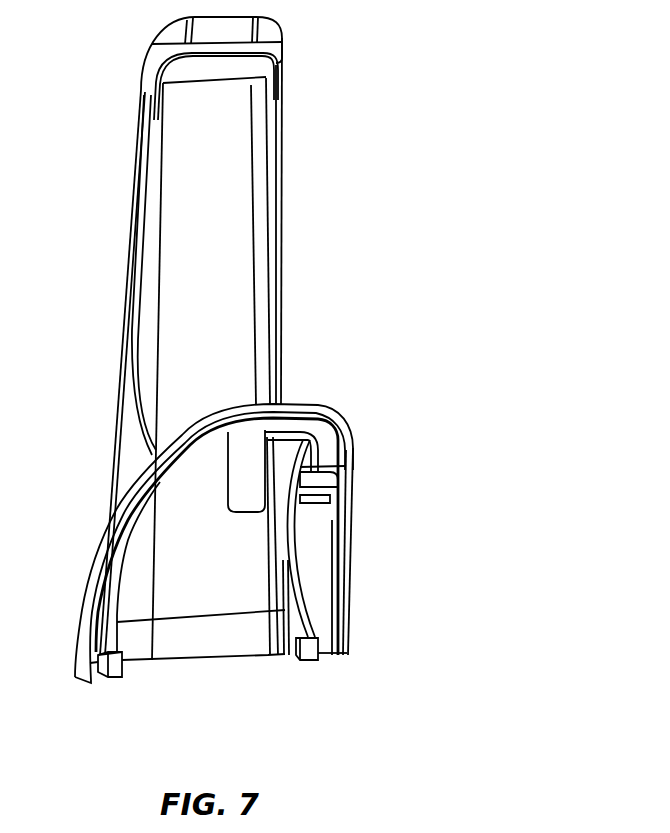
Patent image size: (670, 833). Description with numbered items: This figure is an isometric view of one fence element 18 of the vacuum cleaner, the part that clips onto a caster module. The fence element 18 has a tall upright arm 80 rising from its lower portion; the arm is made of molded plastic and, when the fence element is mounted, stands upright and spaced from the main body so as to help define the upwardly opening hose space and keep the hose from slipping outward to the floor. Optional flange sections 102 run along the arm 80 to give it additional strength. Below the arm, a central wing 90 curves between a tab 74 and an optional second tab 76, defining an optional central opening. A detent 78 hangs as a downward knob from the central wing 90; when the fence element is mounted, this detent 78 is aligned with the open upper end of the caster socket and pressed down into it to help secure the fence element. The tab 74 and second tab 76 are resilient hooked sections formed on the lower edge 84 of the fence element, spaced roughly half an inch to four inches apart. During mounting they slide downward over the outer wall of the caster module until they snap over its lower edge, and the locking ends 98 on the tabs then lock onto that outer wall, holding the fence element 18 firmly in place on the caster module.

The fence element 18 is at (287, 163).
The arm 80 is at (233, 275).
The flange sections 102 is at (130, 443).
The central wing 90 is at (300, 413).
The detent 78 is at (247, 468).
The lower edge 84 is at (202, 660).
The tab 74 is at (110, 680).
The second tab 76 is at (305, 662).
The locking ends 98 is at (115, 652).